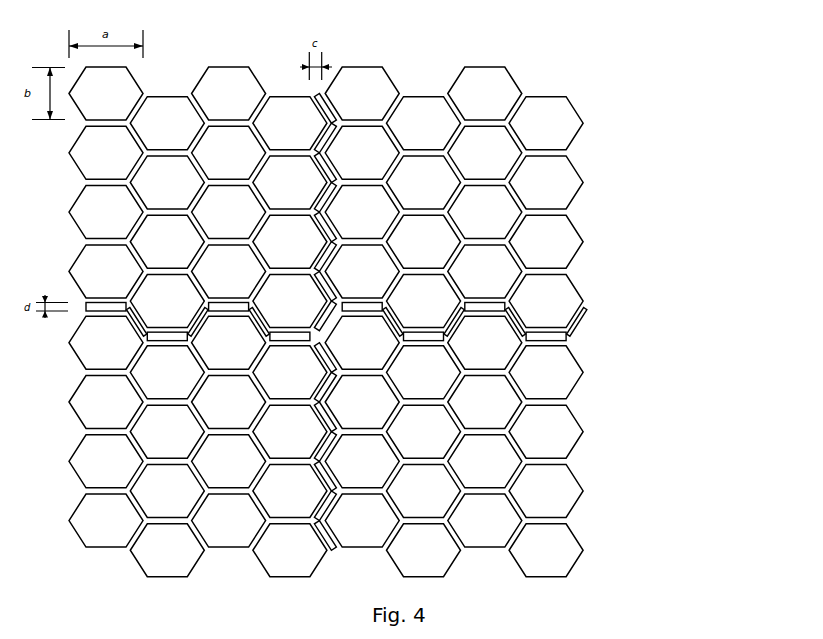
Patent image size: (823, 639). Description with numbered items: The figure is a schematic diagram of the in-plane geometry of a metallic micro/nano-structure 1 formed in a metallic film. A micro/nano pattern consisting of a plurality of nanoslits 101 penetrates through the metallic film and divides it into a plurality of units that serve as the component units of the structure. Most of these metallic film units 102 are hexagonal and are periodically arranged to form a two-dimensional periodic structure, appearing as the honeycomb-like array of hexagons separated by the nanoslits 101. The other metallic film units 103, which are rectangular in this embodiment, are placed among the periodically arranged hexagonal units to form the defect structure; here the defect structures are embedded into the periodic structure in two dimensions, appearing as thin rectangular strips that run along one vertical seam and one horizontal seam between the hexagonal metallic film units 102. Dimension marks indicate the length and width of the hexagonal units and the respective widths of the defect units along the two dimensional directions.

The metallic micro/nano-structure 1 is at (417, 301).
The nanoslit 101 is at (520, 97).
The metallic film unit 102 is at (557, 245).
The metallic film unit 103 is at (565, 337).